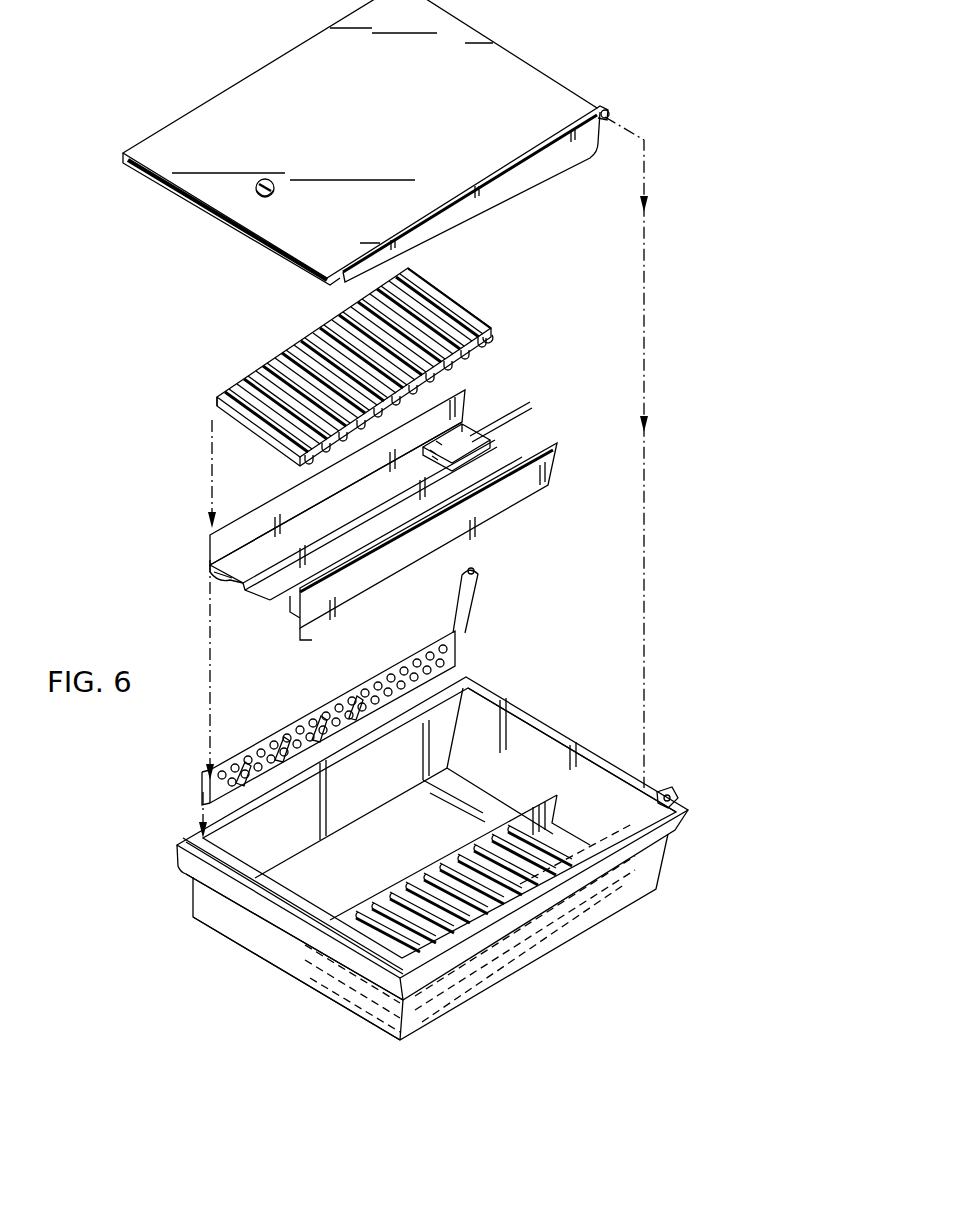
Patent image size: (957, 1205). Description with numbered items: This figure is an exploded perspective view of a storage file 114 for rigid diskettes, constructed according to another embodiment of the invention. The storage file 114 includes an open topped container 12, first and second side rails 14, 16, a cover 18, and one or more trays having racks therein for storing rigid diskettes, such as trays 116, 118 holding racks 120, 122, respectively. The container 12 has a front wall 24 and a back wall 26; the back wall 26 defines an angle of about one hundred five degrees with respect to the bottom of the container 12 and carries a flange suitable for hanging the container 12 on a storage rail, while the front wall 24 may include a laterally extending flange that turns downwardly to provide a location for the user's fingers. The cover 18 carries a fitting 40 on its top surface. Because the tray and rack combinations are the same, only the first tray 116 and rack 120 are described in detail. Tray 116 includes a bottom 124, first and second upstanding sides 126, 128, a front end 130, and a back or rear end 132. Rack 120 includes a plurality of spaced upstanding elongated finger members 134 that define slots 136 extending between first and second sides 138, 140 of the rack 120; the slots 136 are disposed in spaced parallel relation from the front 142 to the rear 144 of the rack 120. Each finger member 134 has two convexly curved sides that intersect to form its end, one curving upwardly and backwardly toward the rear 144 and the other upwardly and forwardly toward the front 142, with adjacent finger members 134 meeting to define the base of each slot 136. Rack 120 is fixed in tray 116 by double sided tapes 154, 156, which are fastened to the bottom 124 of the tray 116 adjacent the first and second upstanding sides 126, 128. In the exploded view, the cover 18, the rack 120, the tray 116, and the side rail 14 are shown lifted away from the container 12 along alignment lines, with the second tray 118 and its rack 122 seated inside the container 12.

The container 12 is at (439, 858).
The first side rail 14 is at (198, 783).
The second side rail 16 is at (708, 775).
The cover 18 is at (347, 142).
The front wall 24 is at (219, 926).
The back wall 26 is at (522, 735).
The lid knob 40 is at (274, 196).
The storage file 114 is at (82, 382).
The tray 116 is at (355, 538).
The tray 118 is at (430, 857).
The rack 120 is at (365, 368).
The rack 122 is at (365, 918).
The bottom 124 is at (492, 452).
The first upstanding side 126 is at (266, 503).
The second upstanding side 128 is at (522, 488).
The front end 130 is at (267, 622).
The rear end 132 is at (487, 416).
The finger member 134 is at (272, 374).
The slot 136 is at (490, 332).
The first side 138 is at (222, 373).
The second side 140 is at (324, 322).
The front 142 is at (268, 450).
The rear 144 is at (498, 301).
The double sided tape 154 is at (222, 582).
The double sided tape 156 is at (284, 614).